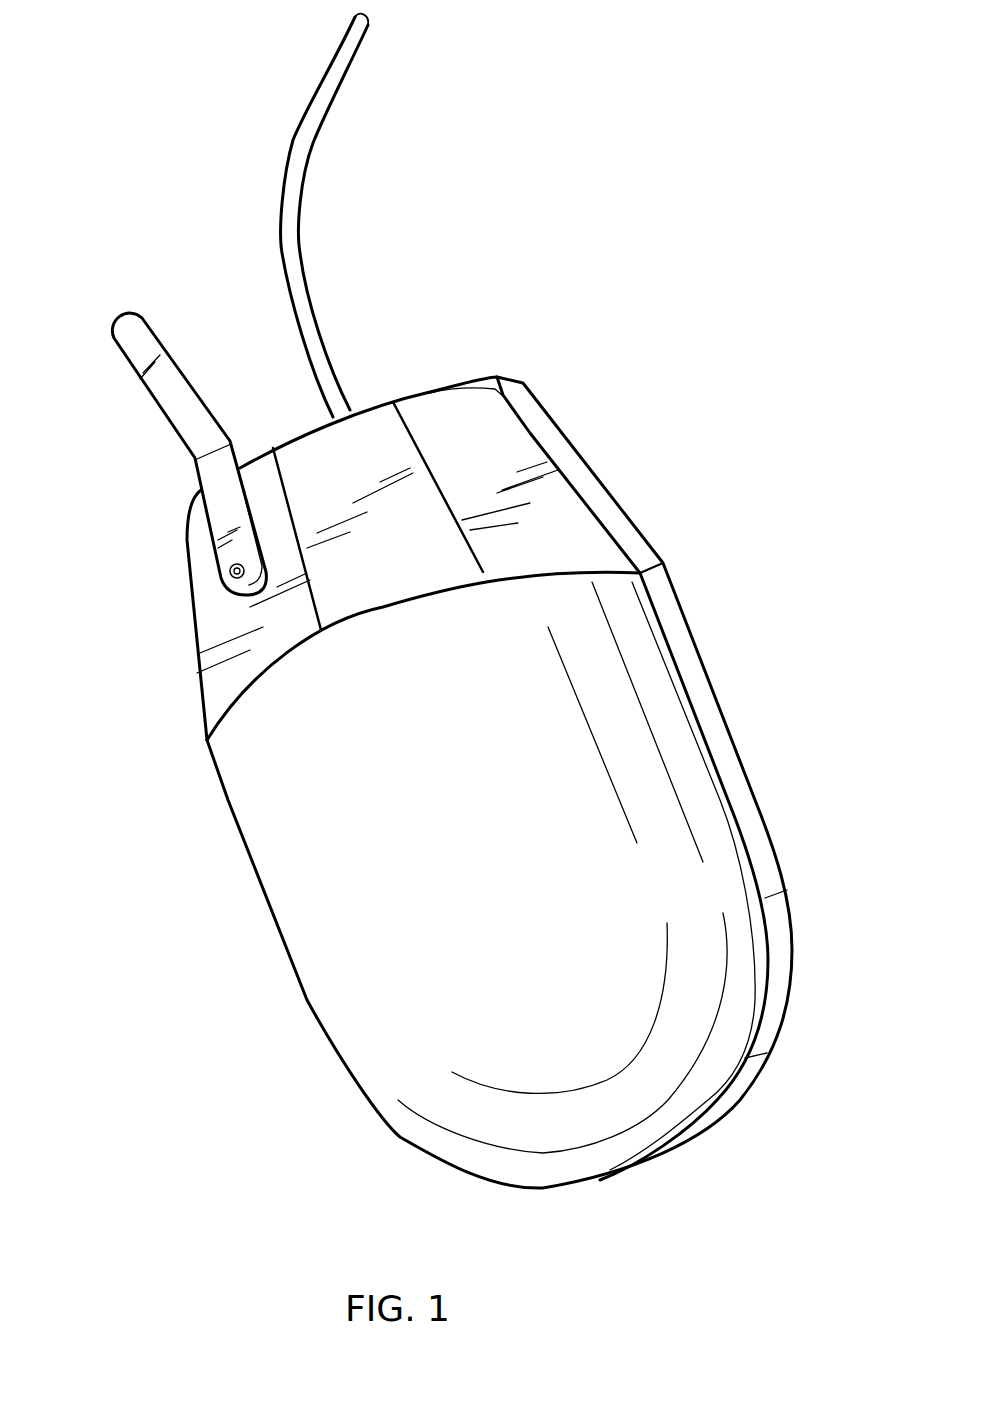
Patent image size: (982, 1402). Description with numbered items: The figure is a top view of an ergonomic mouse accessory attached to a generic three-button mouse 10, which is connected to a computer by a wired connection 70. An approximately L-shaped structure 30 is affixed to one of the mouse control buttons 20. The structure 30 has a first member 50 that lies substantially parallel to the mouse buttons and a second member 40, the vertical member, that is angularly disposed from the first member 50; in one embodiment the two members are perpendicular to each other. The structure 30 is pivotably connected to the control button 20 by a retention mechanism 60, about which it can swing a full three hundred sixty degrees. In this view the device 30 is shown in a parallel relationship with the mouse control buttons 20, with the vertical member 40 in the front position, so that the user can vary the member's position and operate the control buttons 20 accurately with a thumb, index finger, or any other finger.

The three-button mouse 10 is at (715, 695).
The mouse control button 20 is at (199, 675).
The L-shaped structure 30 is at (163, 448).
The second member 40 is at (169, 420).
The first member 50 is at (208, 518).
The retention mechanism 60 is at (230, 571).
The wired connection 70 is at (306, 160).